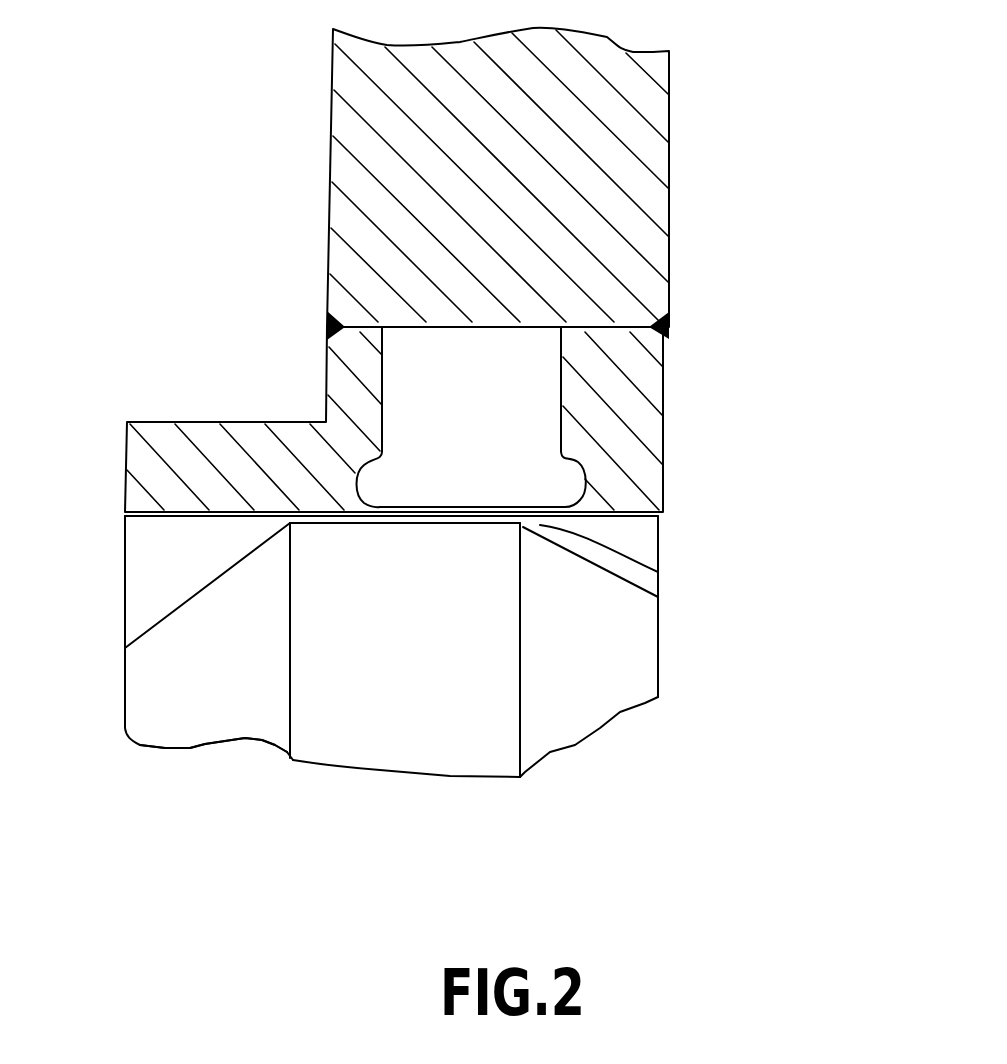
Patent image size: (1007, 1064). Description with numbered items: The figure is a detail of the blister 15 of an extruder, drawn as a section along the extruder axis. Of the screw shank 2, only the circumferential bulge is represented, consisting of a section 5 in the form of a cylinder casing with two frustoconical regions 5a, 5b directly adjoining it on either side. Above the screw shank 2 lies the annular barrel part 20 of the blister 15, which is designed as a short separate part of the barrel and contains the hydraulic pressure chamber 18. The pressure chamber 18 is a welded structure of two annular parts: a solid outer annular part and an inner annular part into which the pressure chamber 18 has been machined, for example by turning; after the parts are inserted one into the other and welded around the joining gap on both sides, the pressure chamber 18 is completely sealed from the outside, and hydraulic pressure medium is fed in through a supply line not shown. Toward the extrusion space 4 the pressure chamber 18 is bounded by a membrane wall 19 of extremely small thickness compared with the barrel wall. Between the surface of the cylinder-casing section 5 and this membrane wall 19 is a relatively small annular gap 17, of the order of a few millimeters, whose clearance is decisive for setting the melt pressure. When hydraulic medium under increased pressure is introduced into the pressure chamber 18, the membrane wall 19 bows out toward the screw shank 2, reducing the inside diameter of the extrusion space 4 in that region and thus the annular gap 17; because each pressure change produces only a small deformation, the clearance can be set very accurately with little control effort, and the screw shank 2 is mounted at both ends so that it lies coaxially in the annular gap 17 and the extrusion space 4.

The screw shank 2 is at (125, 700).
The extrusion space 4 is at (165, 563).
The section in the form of a cylinder casing 5 is at (420, 745).
The frustoconical region 5a is at (217, 717).
The frustoconical region 5b is at (600, 700).
The blister 15 is at (773, 492).
The annular gap 17 is at (658, 572).
The hydraulic pressure chamber 18 is at (537, 388).
The membrane wall 19 is at (442, 503).
The annular barrel part 20 is at (628, 174).